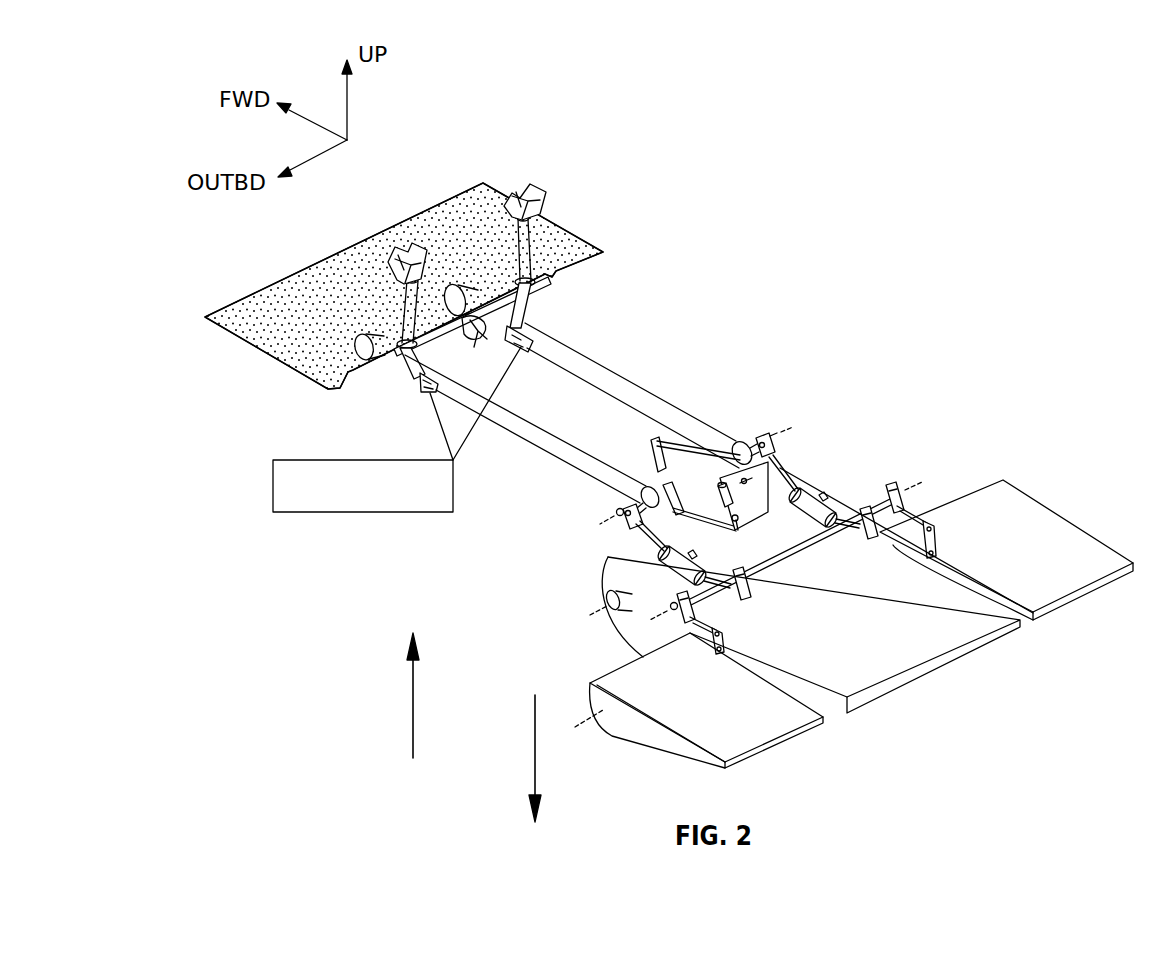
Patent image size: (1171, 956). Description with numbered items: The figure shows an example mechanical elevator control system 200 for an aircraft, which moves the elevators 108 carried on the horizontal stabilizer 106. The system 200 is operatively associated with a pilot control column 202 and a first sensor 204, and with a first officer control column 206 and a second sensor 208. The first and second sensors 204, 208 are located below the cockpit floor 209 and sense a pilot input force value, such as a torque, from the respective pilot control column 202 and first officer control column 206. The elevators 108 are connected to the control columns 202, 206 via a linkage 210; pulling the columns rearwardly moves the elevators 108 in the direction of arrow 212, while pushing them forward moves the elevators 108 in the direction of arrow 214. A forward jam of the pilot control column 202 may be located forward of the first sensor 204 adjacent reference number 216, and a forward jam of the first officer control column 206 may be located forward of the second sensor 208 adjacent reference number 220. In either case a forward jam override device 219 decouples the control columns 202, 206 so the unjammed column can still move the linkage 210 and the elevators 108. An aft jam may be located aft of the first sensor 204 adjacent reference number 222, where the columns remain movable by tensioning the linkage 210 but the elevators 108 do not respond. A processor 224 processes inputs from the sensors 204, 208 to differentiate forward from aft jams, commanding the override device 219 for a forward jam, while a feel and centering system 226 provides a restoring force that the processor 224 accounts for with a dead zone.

The horizontal stabilizer 106 is at (935, 662).
The elevators 108 is at (773, 742).
The mechanical elevator control system 200 is at (832, 192).
The pilot control column 202 is at (400, 304).
The first sensor 204 is at (421, 388).
The first officer control column 206 is at (538, 233).
The second sensor 208 is at (535, 340).
The cockpit floor 209 is at (256, 306).
The linkage 210 is at (552, 459).
The arrow 212 is at (412, 695).
The arrow 214 is at (533, 758).
The forward jam location for pilot control column 216 is at (422, 326).
The forward jam override device 219 is at (476, 343).
The forward jam location for first officer control column 220 is at (497, 288).
The aft jam location 222 is at (618, 533).
The processor 224 is at (352, 460).
The feel and centering system 226 is at (757, 500).